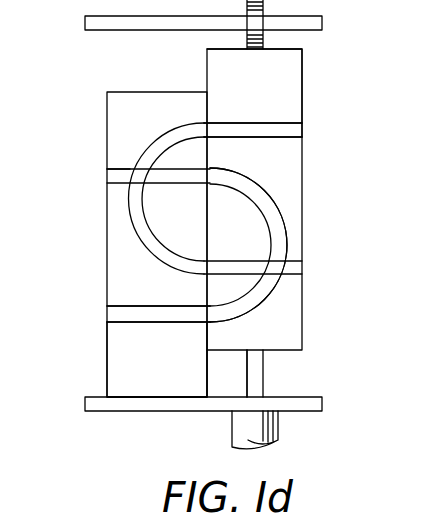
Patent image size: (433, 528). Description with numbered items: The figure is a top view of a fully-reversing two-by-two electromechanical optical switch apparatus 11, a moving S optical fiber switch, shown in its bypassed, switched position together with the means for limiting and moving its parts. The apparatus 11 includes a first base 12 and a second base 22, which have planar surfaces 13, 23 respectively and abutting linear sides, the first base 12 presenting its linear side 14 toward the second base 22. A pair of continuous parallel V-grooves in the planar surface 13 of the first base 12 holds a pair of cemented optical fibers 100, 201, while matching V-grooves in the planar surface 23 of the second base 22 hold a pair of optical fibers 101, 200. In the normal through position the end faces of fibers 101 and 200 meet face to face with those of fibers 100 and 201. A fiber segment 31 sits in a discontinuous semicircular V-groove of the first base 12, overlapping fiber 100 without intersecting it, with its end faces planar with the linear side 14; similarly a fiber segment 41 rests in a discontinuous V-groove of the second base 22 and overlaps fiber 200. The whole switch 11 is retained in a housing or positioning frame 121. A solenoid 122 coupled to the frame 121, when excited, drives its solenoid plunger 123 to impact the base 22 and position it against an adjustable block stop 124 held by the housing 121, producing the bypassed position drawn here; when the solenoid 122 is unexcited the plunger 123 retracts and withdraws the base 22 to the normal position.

The optical switch apparatus 11 is at (90, 262).
The first base 12 is at (148, 92).
The planar surface 13 is at (122, 345).
The linear side 14 is at (207, 379).
The second base 22 is at (302, 173).
The planar surface 23 is at (283, 97).
The fiber segment 31 is at (130, 208).
The fiber segment 41 is at (283, 229).
The optical fiber 100 is at (123, 169).
The optical fiber 101 is at (284, 123).
The housing 121 is at (85, 30).
The solenoid 122 is at (280, 424).
The solenoid plunger 123 is at (265, 378).
The adjustable block stop 124 is at (265, 37).
The optical fiber 200 is at (290, 261).
The optical fiber 201 is at (130, 305).